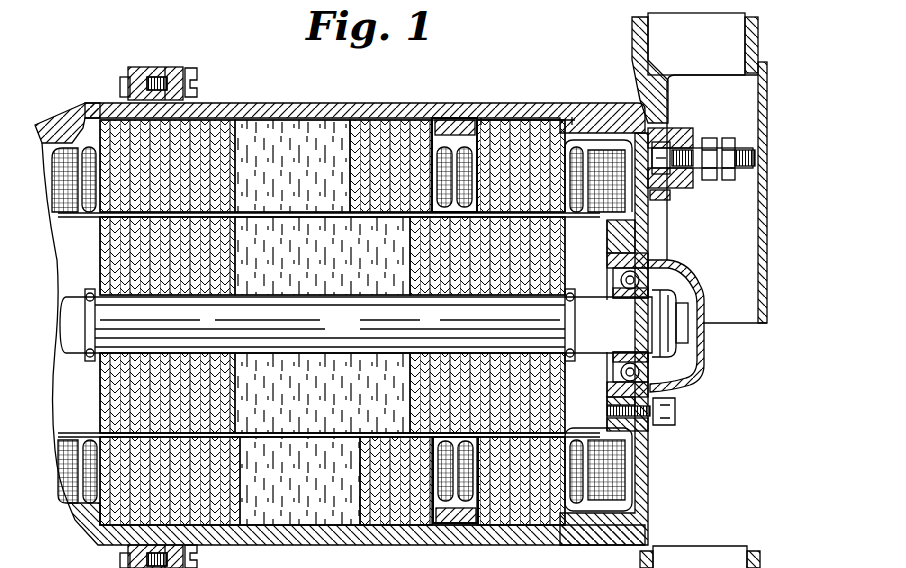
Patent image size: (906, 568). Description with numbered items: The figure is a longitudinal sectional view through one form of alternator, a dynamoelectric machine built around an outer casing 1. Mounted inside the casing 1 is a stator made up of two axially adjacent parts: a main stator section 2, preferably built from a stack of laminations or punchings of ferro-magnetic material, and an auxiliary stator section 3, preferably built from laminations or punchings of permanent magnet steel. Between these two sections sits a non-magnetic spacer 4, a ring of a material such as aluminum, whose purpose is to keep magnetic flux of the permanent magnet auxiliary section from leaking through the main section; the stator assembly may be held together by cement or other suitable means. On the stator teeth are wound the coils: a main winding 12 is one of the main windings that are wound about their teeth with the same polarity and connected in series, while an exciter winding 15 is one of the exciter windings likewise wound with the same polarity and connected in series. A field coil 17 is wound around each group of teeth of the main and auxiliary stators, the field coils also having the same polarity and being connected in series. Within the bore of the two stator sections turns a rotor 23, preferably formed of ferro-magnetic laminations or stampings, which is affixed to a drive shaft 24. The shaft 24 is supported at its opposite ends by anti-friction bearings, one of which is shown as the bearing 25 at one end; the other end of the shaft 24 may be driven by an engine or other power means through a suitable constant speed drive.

The outer casing 1 is at (290, 103).
The main stator section 2 is at (272, 168).
The auxiliary stator section 3 is at (527, 168).
The non-magnetic spacer 4 is at (462, 130).
The main winding 12 is at (88, 147).
The exciter winding 15 is at (572, 117).
The field coil 17 is at (63, 148).
The rotor 23 is at (354, 259).
The drive shaft 24 is at (354, 330).
The anti-friction bearing 25 is at (652, 262).